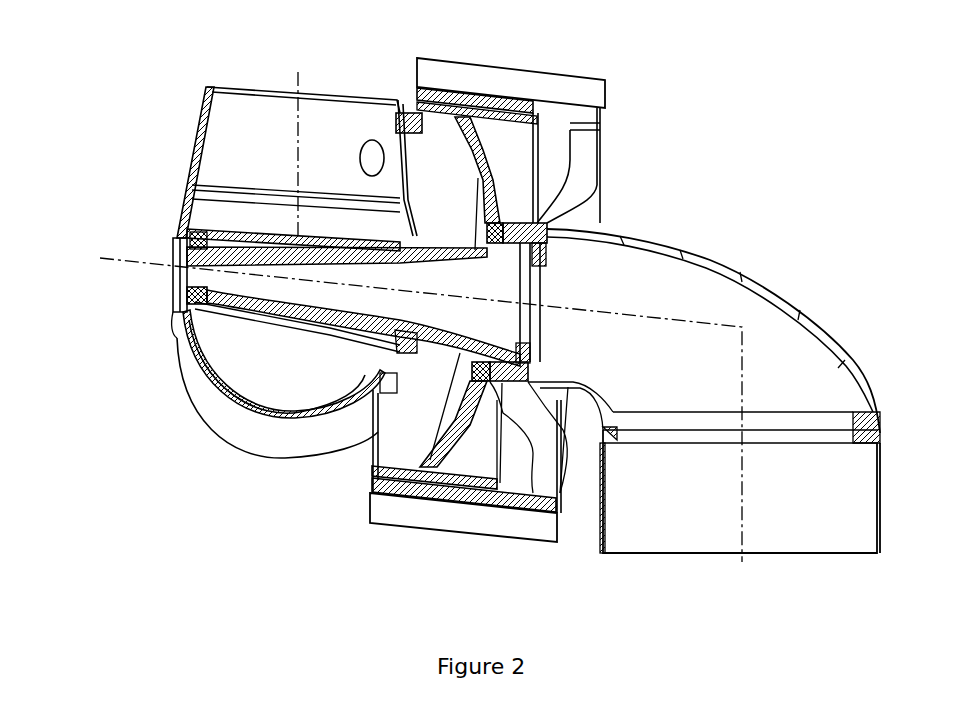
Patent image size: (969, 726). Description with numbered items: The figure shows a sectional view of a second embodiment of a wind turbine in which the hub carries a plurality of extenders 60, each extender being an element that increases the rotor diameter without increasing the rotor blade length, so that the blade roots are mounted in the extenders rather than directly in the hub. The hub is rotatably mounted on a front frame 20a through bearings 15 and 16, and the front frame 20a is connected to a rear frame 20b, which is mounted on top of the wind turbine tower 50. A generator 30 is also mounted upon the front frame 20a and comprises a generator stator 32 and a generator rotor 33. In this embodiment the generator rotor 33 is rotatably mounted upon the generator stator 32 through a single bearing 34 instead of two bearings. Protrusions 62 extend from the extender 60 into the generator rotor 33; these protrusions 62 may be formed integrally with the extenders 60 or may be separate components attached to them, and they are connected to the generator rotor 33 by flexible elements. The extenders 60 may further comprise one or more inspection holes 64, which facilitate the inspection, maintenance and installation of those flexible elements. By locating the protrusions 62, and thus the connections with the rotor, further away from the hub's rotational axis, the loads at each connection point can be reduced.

The bearing 15 is at (183, 297).
The bearing 16 is at (330, 342).
The front frame 20a is at (178, 304).
The rear frame 20b is at (655, 243).
The generator 30 is at (596, 64).
The generator stator 32 is at (373, 492).
The generator rotor 33 is at (372, 470).
The bearing 34 is at (501, 198).
The wind turbine tower 50 is at (600, 535).
The extender 60 is at (200, 127).
The protrusion 62 is at (405, 113).
The inspection hole 64 is at (366, 158).